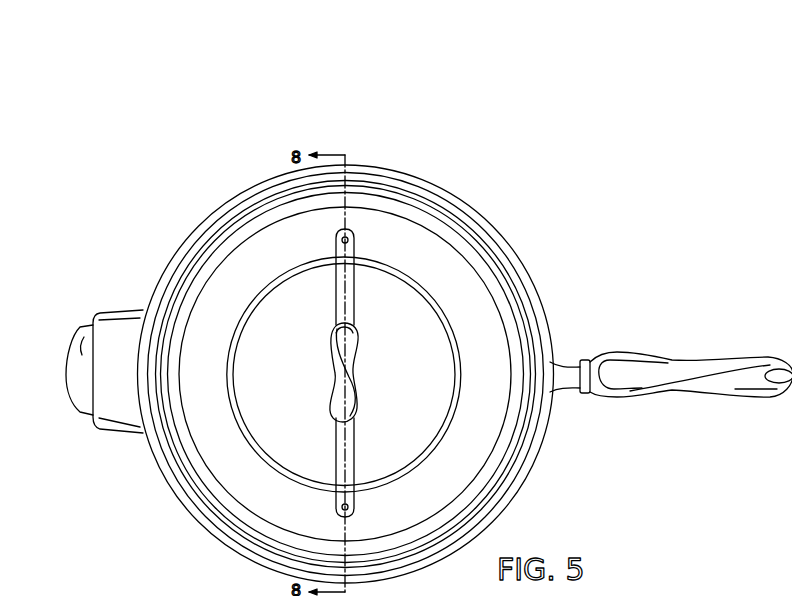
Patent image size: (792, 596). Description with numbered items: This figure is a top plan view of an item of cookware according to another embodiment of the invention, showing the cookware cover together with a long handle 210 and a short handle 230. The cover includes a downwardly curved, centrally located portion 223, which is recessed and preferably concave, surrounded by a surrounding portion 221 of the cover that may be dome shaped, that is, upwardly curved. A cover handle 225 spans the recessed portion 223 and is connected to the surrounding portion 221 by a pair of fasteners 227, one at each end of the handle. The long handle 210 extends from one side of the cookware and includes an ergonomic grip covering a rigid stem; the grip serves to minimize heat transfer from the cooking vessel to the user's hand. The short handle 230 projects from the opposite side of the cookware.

The long handle 210 is at (688, 362).
The surrounding portion 221 is at (373, 221).
The downwardly curved centrally located portion 223 is at (413, 317).
The cover handle 225 is at (351, 296).
The fasteners 227 is at (342, 240).
The short handle 230 is at (100, 310).